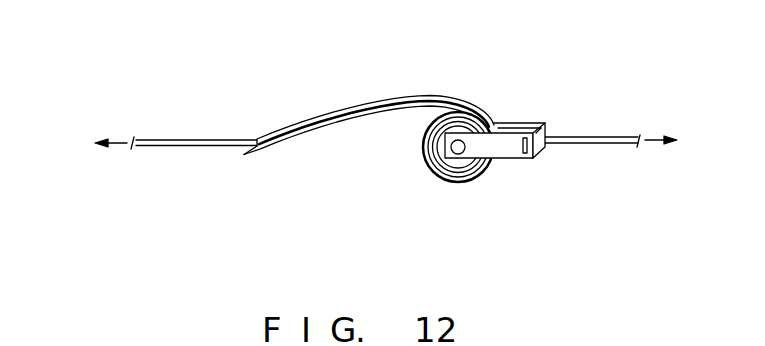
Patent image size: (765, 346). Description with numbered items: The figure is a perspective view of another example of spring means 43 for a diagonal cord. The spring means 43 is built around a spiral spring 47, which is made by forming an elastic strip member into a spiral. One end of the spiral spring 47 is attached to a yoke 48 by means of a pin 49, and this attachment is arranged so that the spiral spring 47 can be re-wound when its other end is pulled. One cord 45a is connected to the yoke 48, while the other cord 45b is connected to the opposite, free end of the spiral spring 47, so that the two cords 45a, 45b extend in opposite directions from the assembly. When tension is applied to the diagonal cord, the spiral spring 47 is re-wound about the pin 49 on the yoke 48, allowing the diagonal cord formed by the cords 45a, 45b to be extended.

The spring means 43 is at (381, 93).
The cord 45a is at (600, 144).
The cord 45b is at (185, 146).
The spiral spring 47 is at (468, 108).
The yoke 48 is at (547, 123).
The pin 49 is at (459, 155).